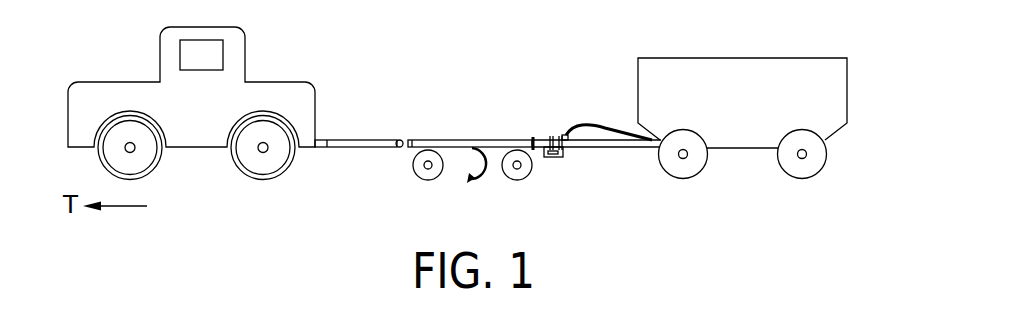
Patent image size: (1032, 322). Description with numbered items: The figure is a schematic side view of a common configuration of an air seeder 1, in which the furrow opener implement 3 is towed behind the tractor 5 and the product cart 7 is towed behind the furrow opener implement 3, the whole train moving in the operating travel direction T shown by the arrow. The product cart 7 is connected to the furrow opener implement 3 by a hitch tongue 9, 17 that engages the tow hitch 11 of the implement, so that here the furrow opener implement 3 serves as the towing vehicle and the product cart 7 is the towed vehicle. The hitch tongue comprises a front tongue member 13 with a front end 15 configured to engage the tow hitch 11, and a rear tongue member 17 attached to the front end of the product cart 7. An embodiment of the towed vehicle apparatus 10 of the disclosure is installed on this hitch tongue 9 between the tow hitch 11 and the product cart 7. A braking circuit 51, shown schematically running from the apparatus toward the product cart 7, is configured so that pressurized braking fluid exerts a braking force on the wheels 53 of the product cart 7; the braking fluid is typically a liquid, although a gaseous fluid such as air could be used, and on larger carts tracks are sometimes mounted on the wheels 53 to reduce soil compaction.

The air seeder 1 is at (553, 51).
The tractor 5 is at (247, 50).
The furrow opener implement 3 is at (443, 139).
The tow hitch 11 is at (533, 140).
The front tongue member 13 is at (535, 148).
The front end 15 is at (555, 136).
The towed vehicle apparatus 10 is at (572, 170).
The braking circuit 51 is at (586, 125).
The hitch tongue 9 is at (615, 179).
The rear tongue member 17 is at (615, 148).
The product cart 7 is at (847, 72).
The wheels 53 is at (800, 178).